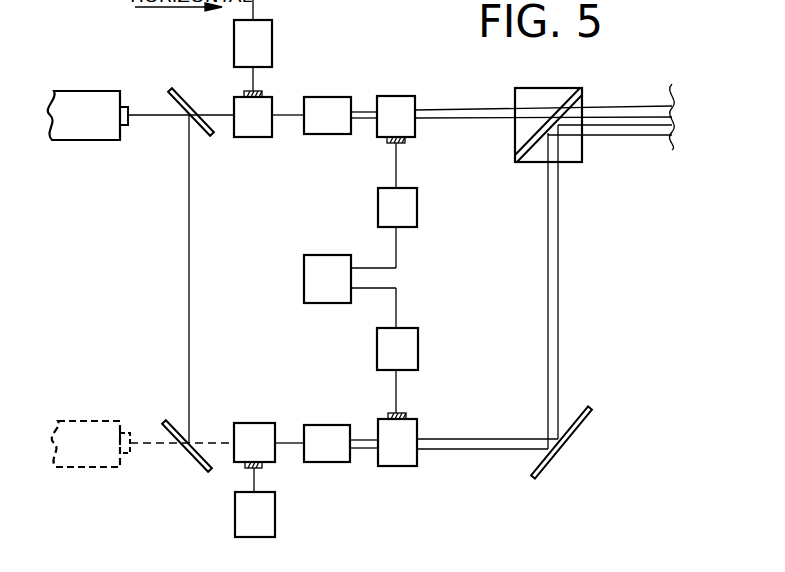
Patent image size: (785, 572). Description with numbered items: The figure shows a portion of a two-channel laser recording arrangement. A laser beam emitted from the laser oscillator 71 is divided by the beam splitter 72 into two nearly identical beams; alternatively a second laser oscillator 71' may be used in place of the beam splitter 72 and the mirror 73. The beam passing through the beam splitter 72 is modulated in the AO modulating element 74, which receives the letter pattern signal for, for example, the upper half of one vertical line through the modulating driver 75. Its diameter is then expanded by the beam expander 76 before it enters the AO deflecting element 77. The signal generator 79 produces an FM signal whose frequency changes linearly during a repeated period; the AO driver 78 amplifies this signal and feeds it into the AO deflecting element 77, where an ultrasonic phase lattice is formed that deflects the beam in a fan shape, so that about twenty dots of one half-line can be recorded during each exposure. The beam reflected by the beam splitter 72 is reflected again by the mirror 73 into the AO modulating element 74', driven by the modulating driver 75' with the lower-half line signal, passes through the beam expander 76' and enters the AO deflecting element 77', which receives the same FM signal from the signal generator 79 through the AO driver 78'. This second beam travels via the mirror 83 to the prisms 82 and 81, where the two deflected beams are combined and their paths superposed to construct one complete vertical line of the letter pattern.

The laser oscillator 71 is at (88, 115).
The laser oscillator 71' is at (91, 444).
The beam splitter 72 is at (194, 129).
The mirror 73 is at (185, 452).
The AO modulating element 74 is at (253, 114).
The AO modulating element 74' is at (254, 445).
The modulating driver 75 is at (253, 45).
The modulating driver 75' is at (255, 514).
The beam expander 76 is at (327, 115).
The beam expander 76' is at (327, 443).
The AO deflecting element 77 is at (396, 119).
The AO deflecting element 77' is at (397, 439).
The AO driver 78 is at (397, 207).
The AO driver 78' is at (397, 349).
The signal generator 79 is at (327, 279).
The prism 81 is at (548, 108).
The prism 82 is at (610, 287).
The mirror 83 is at (563, 444).